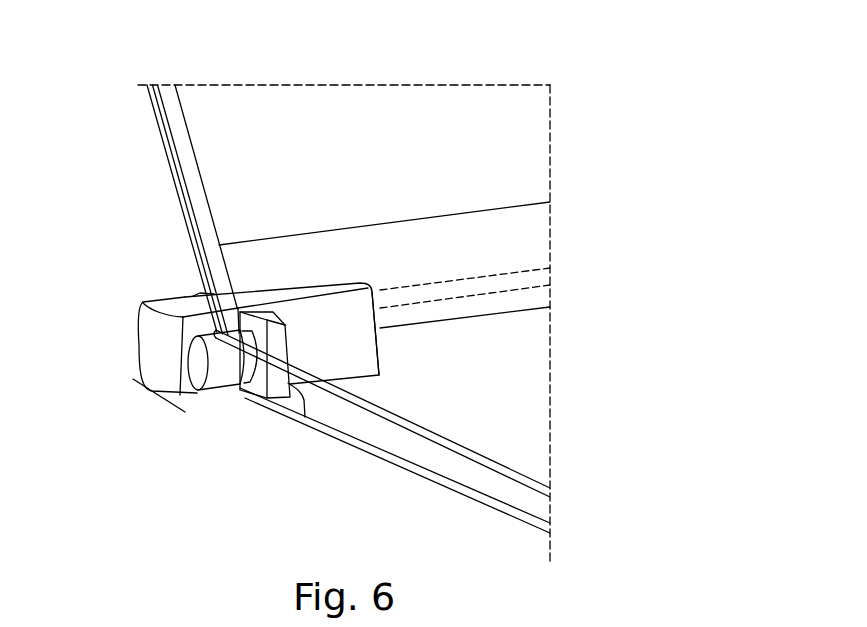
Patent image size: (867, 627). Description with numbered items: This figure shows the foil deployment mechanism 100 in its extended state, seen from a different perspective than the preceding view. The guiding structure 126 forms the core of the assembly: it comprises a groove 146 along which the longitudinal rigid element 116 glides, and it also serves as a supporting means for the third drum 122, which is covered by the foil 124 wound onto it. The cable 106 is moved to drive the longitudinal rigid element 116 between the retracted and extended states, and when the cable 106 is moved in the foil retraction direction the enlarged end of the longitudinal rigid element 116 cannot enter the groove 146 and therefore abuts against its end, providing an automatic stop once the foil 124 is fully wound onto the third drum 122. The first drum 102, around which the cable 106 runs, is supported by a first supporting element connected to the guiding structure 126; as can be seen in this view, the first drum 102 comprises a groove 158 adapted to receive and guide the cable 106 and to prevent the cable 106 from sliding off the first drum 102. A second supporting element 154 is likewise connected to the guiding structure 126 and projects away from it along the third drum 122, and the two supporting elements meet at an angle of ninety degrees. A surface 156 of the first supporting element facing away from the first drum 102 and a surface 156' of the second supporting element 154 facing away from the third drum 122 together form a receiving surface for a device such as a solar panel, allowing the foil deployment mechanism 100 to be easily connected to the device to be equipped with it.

The foil deployment mechanism 100 is at (182, 427).
The first drum 102 is at (222, 378).
The cable 106 is at (535, 478).
The longitudinal rigid element 116 is at (172, 172).
The third drum 122 is at (515, 271).
The foil 124 is at (539, 129).
The guiding structure 126 is at (157, 398).
The groove 146 is at (222, 295).
The second supporting element 154 is at (340, 308).
The surface of the first supporting element 156 is at (320, 435).
The surface of the second supporting element 156' is at (429, 333).
The groove 158 is at (249, 394).